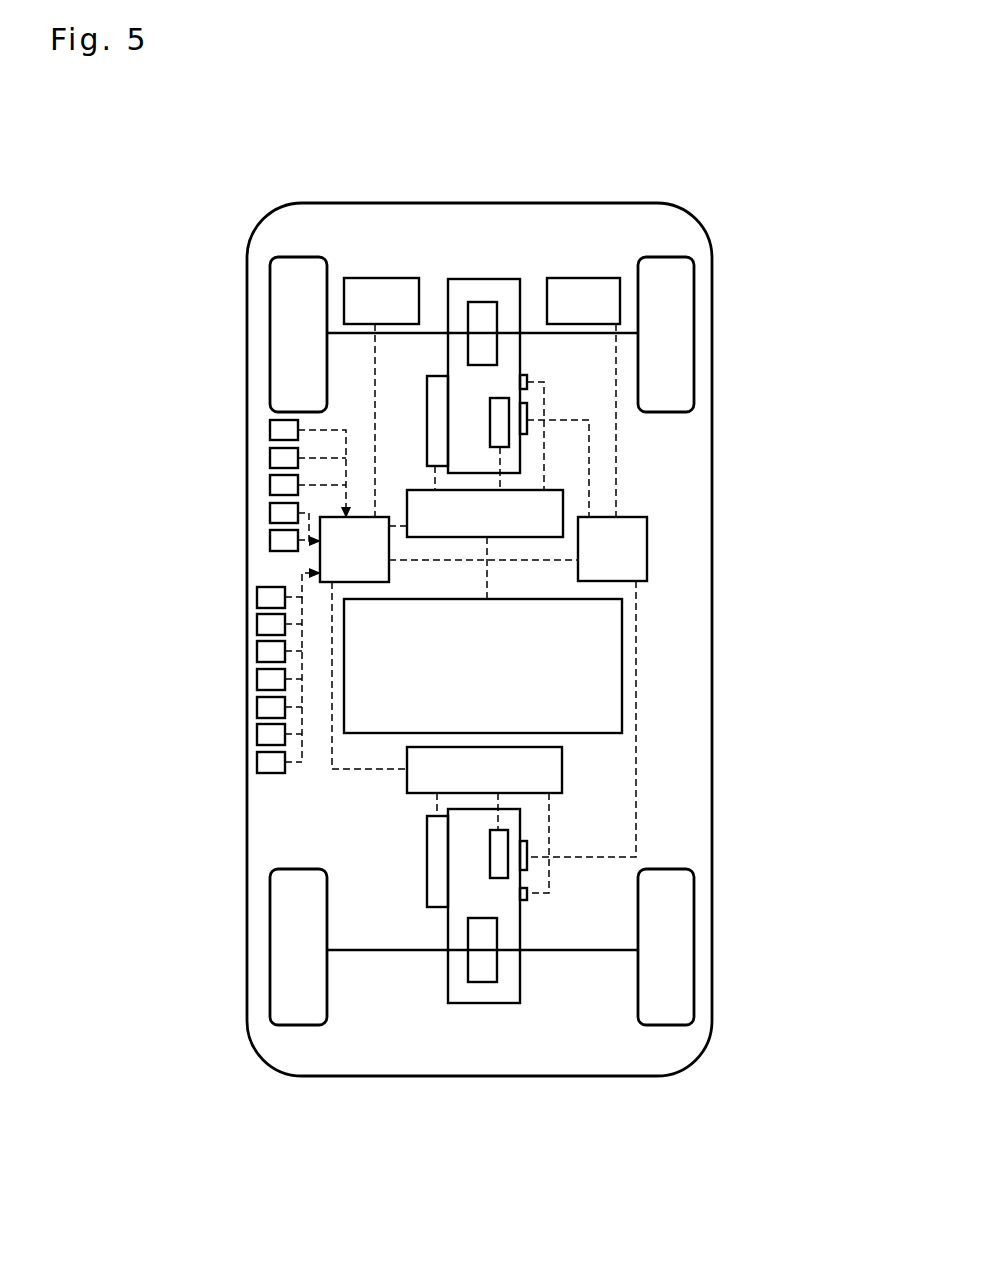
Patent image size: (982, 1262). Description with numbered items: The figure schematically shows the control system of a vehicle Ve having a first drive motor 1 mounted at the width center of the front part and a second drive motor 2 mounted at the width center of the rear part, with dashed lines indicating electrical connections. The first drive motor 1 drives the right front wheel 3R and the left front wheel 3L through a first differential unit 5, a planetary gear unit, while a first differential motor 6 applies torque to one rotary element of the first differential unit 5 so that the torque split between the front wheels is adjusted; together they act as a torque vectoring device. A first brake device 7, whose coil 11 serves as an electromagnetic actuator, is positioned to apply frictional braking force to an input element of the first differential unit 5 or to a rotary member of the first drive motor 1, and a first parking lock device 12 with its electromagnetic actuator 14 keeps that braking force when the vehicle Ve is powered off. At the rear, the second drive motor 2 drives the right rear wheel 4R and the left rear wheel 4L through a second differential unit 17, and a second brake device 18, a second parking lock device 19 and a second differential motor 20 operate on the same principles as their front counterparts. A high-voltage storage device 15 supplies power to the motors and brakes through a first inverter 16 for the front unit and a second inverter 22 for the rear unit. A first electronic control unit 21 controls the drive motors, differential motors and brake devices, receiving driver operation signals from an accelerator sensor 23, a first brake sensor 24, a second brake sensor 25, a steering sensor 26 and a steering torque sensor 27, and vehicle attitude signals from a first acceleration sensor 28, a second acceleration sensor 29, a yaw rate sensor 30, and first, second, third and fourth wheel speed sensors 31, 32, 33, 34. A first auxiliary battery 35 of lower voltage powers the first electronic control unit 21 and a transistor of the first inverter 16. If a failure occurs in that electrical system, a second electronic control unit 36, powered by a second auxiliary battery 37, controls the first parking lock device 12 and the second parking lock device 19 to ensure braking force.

The vehicle Ve is at (757, 190).
The first drive motor 1 is at (433, 404).
The second drive motor 2 is at (433, 850).
The left front wheel 3L is at (298, 268).
The right front wheel 3R is at (672, 268).
The left rear wheel 4L is at (295, 1013).
The right rear wheel 4R is at (667, 1013).
The first differential unit 5 is at (483, 305).
The first differential motor 6 is at (523, 374).
The first brake device 7 is at (526, 304).
The coil 11 is at (500, 403).
The first parking lock device 12 is at (666, 427).
The electromagnetic actuator 14 is at (527, 412).
The storage device 15 is at (605, 673).
The first inverter 16 is at (553, 503).
The second differential unit 17 is at (482, 972).
The second brake device 18 is at (497, 860).
The second parking lock device 19 is at (527, 865).
The second differential motor 20 is at (527, 895).
The first electronic control unit 21 is at (333, 557).
The second inverter 22 is at (407, 779).
The accelerator sensor 23 is at (268, 430).
The first brake sensor 24 is at (268, 458).
The second brake sensor 25 is at (268, 485).
The steering sensor 26 is at (268, 513).
The steering torque sensor 27 is at (268, 540).
The first acceleration sensor 28 is at (256, 597).
The second acceleration sensor 29 is at (256, 624).
The yaw rate sensor 30 is at (256, 652).
The first wheel speed sensor 31 is at (256, 680).
The second wheel speed sensor 32 is at (256, 708).
The third wheel speed sensor 33 is at (256, 735).
The fourth wheel speed sensor 34 is at (256, 763).
The first auxiliary battery 35 is at (384, 290).
The second electronic control unit 36 is at (637, 550).
The second auxiliary battery 37 is at (596, 290).